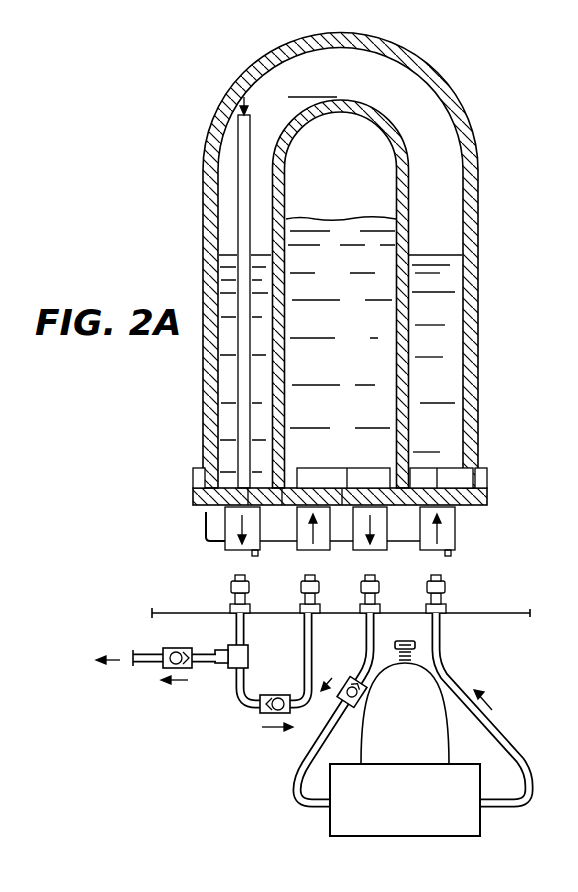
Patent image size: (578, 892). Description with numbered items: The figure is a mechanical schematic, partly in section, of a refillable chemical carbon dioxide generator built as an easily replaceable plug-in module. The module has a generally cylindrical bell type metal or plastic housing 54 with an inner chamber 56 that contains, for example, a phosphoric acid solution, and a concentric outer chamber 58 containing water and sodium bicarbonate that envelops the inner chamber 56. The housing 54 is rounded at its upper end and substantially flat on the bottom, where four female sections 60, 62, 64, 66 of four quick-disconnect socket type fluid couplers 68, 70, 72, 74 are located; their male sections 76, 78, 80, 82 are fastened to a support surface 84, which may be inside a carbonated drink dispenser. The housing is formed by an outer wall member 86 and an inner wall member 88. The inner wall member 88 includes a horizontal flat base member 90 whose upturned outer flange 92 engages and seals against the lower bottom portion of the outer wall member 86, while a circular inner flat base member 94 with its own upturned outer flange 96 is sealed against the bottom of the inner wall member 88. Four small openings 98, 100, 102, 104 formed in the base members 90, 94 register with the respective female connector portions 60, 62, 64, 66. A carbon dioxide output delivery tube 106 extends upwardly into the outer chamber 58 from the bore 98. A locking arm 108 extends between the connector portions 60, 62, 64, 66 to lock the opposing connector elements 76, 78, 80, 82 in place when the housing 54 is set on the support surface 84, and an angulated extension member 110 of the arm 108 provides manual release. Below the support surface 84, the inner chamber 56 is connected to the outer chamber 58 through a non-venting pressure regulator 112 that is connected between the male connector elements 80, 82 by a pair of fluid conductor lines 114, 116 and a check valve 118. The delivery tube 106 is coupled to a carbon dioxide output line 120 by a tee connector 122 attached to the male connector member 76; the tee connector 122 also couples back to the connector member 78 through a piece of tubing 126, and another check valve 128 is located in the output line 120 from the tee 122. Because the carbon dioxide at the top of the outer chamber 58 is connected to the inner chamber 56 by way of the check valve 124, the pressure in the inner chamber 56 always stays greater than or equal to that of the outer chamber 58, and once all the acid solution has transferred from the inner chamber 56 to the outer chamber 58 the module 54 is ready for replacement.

The housing 54 is at (366, 254).
The inner chamber 56 is at (383, 175).
The outer chamber 58 is at (398, 77).
The female section 60 is at (255, 531).
The female section 62 is at (298, 548).
The female section 64 is at (383, 528).
The female section 66 is at (456, 538).
The quick-disconnect fluid coupler 68 is at (219, 594).
The quick-disconnect fluid coupler 70 is at (291, 594).
The quick-disconnect fluid coupler 72 is at (354, 594).
The quick-disconnect fluid coupler 74 is at (418, 597).
The male section 76 is at (252, 588).
The male section 78 is at (321, 592).
The male section 80 is at (378, 592).
The male section 82 is at (446, 588).
The support surface 84 is at (530, 607).
The outer wall member 86 is at (478, 183).
The inner wall member 88 is at (407, 202).
The horizontal flat base member 90 is at (417, 488).
The upturned outer flange 92 is at (200, 470).
The circular inner flat base member 94 is at (342, 493).
The upturned outer flange 96 is at (282, 487).
The opening 98 is at (250, 492).
The opening 100 is at (343, 479).
The opening 102 is at (366, 479).
The opening 104 is at (440, 475).
The CO2 output delivery tube 106 is at (238, 145).
The locking arm 108 is at (214, 545).
The angulated extension member 110 is at (204, 538).
The non-venting pressure regulator 112 is at (405, 800).
The fluid conductor line 114 is at (297, 747).
The fluid conductor line 116 is at (510, 742).
The check valve 118 is at (353, 704).
The CO2 output line 120 is at (148, 662).
The tee connector 122 is at (232, 662).
The check valve 124 is at (260, 712).
The piece of tubing 126 is at (305, 660).
The check valve 128 is at (182, 648).